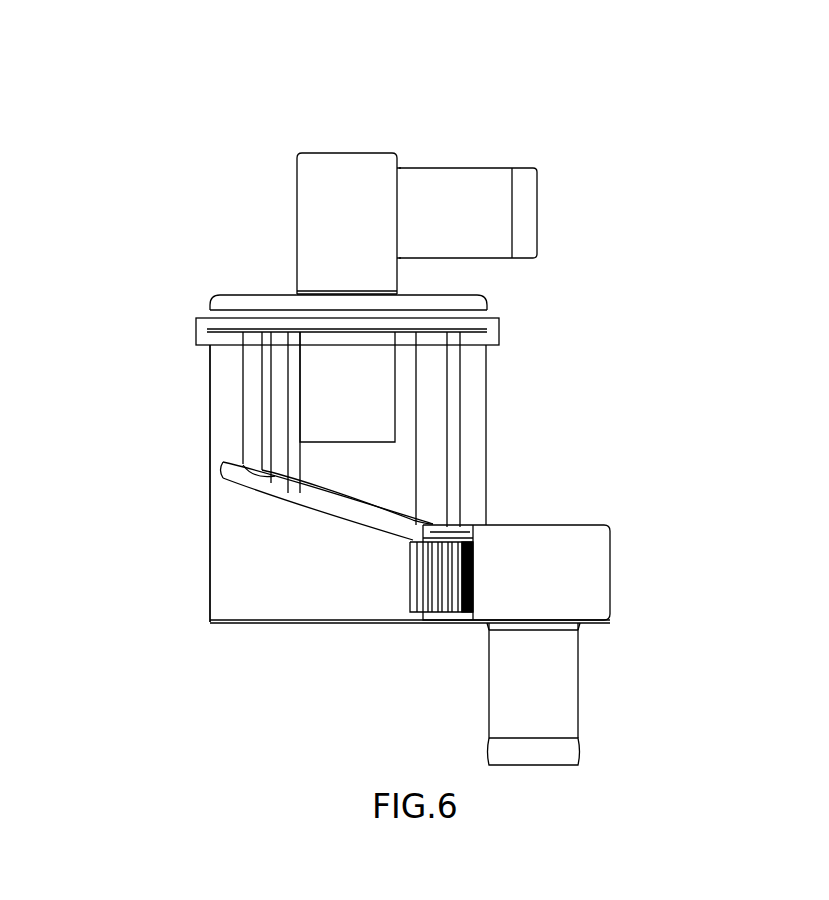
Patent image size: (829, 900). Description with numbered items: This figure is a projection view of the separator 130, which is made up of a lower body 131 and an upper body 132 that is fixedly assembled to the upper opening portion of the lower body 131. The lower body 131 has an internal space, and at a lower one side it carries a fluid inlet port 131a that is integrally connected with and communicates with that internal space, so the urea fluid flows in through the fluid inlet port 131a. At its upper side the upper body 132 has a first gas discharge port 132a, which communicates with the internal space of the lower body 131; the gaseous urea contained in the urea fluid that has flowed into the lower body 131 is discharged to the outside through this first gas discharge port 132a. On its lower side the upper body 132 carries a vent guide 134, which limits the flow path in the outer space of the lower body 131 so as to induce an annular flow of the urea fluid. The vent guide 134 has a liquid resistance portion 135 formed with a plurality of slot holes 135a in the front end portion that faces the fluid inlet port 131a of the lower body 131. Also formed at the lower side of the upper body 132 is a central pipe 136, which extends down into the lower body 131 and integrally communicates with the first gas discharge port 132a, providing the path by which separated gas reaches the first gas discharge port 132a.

The separator 130 is at (265, 106).
The lower body 131 is at (200, 532).
The fluid inlet port 131a is at (578, 707).
The upper body 132 is at (297, 222).
The first gas discharge port 132a is at (538, 217).
The vent guide 134 is at (327, 513).
The liquid resistance portion 135 is at (418, 578).
The slot holes 135a is at (450, 597).
The central pipe 136 is at (395, 390).